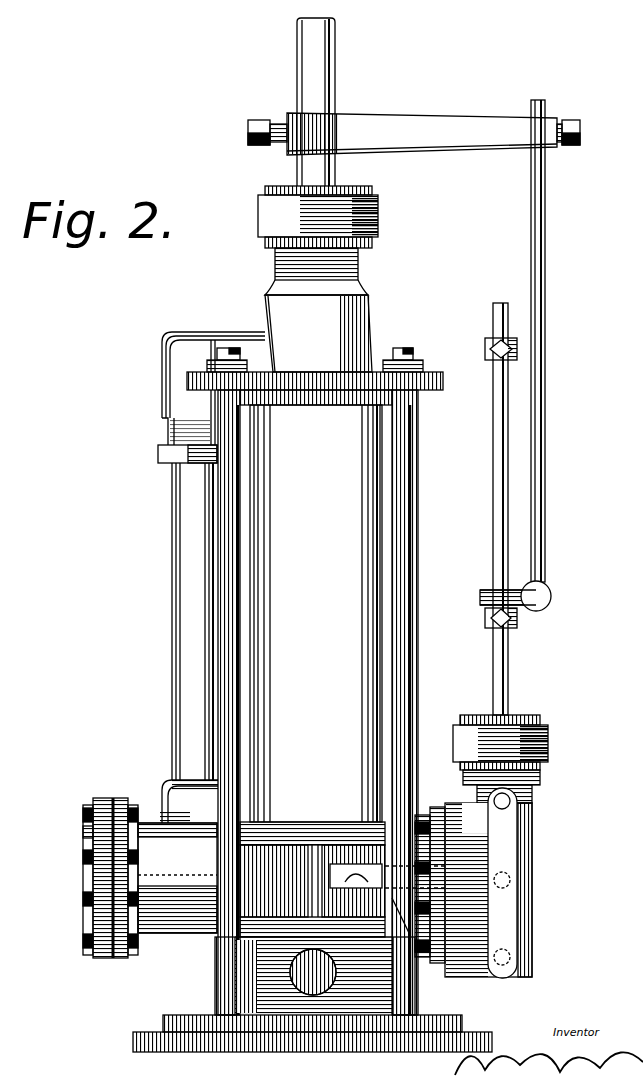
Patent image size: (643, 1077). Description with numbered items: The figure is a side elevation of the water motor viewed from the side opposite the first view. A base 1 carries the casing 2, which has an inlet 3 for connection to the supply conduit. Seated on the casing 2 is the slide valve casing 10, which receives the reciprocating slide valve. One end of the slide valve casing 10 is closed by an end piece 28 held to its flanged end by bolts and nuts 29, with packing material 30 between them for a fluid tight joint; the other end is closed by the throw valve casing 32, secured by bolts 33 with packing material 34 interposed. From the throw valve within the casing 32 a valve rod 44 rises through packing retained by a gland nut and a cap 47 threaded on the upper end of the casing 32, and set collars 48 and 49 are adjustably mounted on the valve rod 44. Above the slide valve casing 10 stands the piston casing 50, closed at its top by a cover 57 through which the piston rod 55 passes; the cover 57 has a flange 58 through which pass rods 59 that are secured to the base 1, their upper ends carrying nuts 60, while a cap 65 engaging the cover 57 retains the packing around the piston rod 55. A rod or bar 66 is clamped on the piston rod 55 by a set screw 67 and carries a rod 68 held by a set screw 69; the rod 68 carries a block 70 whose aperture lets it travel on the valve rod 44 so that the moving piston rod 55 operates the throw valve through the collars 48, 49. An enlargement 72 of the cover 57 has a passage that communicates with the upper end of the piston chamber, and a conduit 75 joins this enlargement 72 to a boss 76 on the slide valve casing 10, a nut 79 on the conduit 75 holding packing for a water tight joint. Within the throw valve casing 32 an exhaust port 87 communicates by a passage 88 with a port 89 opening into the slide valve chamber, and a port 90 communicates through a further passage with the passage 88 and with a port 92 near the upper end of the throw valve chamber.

The base 1 is at (178, 1020).
The casing 2 is at (236, 960).
The inlet 3 is at (315, 988).
The slide valve casing 10 is at (177, 878).
The end piece 28 is at (102, 846).
The bolts and nuts 29 is at (90, 858).
The packing material 30 is at (113, 800).
The throw valve casing 32 is at (532, 841).
The bolts 33 is at (424, 815).
The packing material 34 is at (445, 808).
The valve rod 44 is at (496, 486).
The cap 47 is at (516, 759).
The set collar 48 is at (490, 622).
The set collar 49 is at (490, 360).
The piston casing 50 is at (316, 613).
The piston rod 55 is at (332, 93).
The cover 57 is at (318, 310).
The flange 58 is at (441, 372).
The rods 59 is at (406, 542).
The nuts 60 is at (410, 360).
The cap 65 is at (264, 210).
The rod or bar 66 is at (422, 134).
The set screw 67 is at (250, 128).
The rod 68 is at (532, 254).
The set screw 69 is at (580, 131).
The block 70 is at (540, 601).
The enlargement 72 is at (176, 358).
The conduit 75 is at (172, 607).
The boss 76 is at (180, 797).
The nut 79 is at (162, 459).
The exhaust port 87 is at (512, 881).
The passage 88 is at (410, 960).
The port 89 is at (330, 877).
The port 90 is at (512, 956).
The port 92 is at (510, 801).